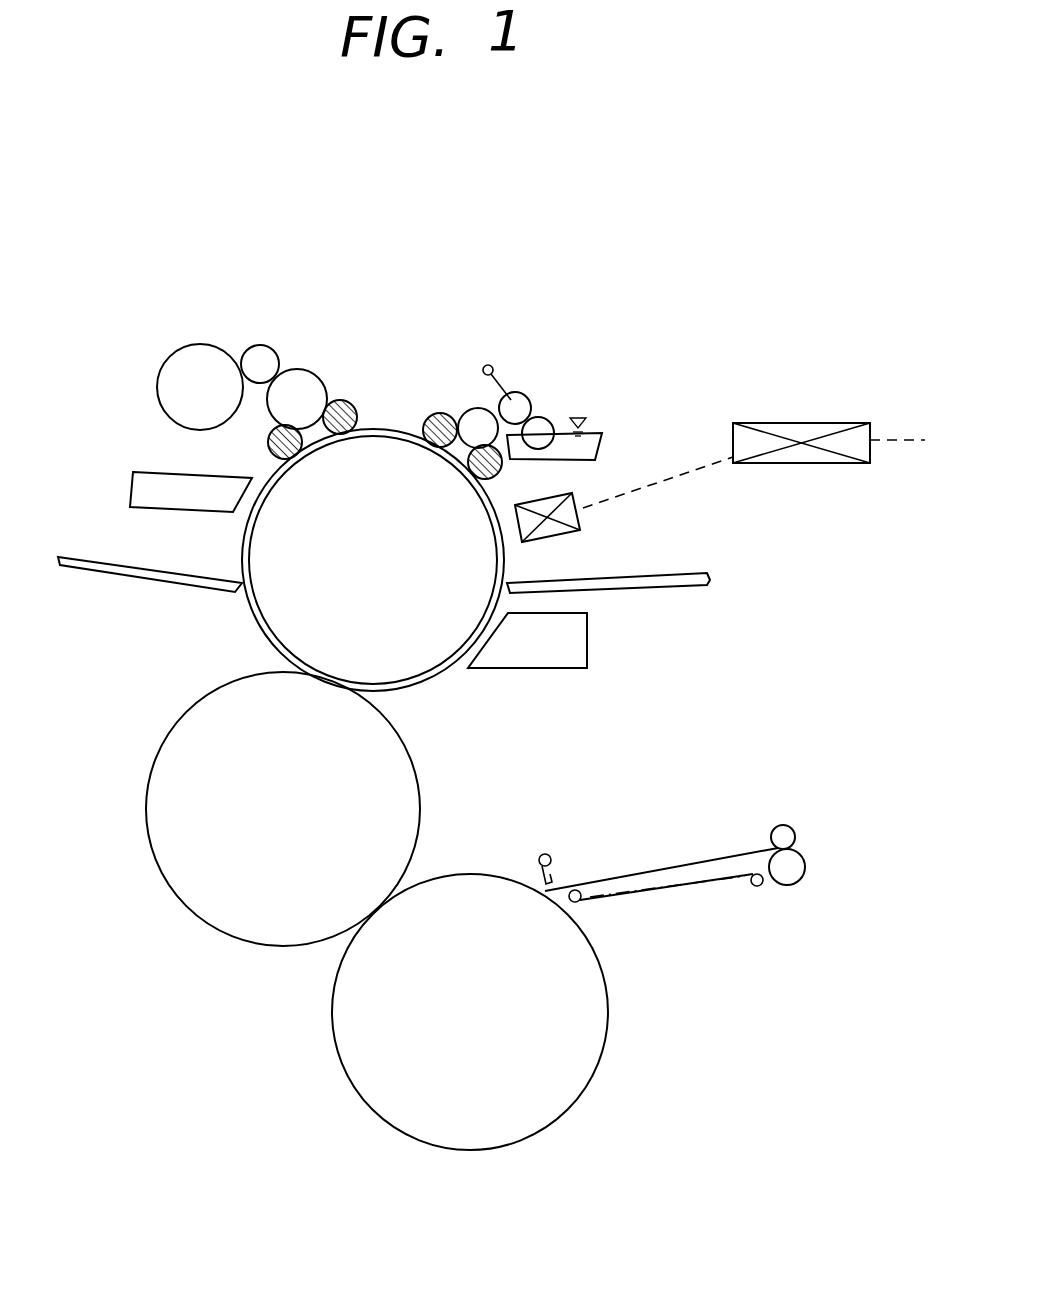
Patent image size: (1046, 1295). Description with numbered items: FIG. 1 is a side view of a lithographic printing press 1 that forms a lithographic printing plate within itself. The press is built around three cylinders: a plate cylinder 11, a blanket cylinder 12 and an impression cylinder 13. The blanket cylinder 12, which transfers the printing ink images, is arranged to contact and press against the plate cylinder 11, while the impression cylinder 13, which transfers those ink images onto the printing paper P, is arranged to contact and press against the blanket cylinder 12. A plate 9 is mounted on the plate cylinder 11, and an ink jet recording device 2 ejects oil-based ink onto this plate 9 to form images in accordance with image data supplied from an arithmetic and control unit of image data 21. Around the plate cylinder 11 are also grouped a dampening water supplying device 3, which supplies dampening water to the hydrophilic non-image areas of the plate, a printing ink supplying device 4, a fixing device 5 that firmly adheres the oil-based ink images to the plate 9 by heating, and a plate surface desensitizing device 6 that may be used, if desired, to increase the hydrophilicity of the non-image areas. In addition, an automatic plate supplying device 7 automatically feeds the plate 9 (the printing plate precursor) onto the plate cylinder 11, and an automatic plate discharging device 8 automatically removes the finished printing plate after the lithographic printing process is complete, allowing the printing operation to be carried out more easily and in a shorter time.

The lithographic printing press 1 is at (428, 300).
The ink jet recording device 2 is at (578, 513).
The dampening water supplying device 3 is at (527, 382).
The printing ink supplying device 4 is at (245, 340).
The fixing device 5 is at (143, 492).
The plate surface desensitizing device 6 is at (587, 642).
The automatic plate supplying device 7 is at (710, 581).
The automatic plate discharging device 8 is at (77, 568).
The plate 9 is at (432, 673).
The plate cylinder 11 is at (272, 612).
The blanket cylinder 12 is at (172, 847).
The impression cylinder 13 is at (365, 1073).
The arithmetic and control unit of image data 21 is at (810, 420).
The printing paper P is at (668, 875).